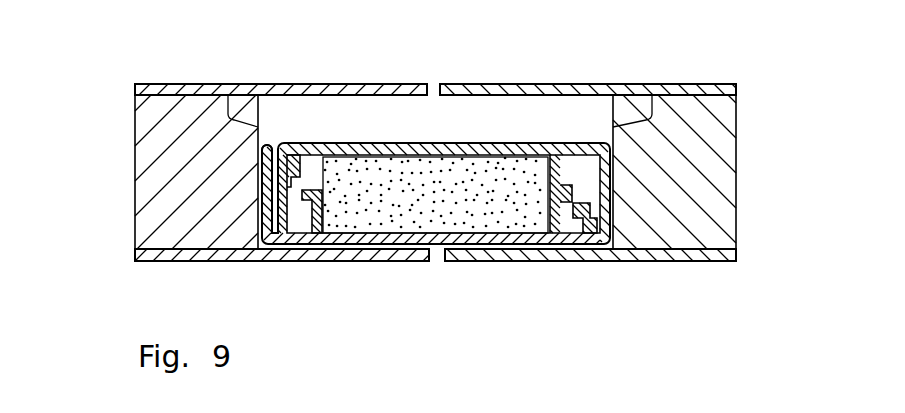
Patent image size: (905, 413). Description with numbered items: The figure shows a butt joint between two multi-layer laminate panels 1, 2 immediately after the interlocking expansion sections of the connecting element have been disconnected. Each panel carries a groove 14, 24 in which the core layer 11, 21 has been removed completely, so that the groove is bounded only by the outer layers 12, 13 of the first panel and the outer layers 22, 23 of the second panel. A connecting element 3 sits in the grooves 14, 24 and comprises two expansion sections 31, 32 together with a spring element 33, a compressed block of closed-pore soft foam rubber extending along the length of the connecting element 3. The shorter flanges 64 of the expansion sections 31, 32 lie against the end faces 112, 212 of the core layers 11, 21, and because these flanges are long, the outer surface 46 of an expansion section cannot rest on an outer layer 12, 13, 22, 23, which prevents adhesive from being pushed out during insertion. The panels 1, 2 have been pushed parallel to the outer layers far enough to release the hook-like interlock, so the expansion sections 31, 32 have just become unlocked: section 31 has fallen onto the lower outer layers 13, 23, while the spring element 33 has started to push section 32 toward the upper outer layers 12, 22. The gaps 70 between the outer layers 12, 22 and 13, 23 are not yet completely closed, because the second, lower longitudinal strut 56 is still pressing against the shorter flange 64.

The multi-layer laminate panel 1 is at (746, 232).
The multi-layer laminate panel 2 is at (128, 237).
The connecting element 3 is at (529, 120).
The core layer 11 is at (675, 111).
The outer layer 12 is at (697, 84).
The outer layer 13 is at (702, 261).
The groove 14 is at (572, 122).
The core layer 21 is at (203, 120).
The outer layer 22 is at (177, 84).
The outer layer 23 is at (180, 261).
The groove 24 is at (300, 125).
The expansion section 31 is at (383, 246).
The expansion section 32 is at (487, 143).
The spring element 33 is at (490, 208).
The outer surface 46 is at (378, 143).
The second, lower longitudinal strut 56 is at (265, 167).
The shorter flange 64 is at (262, 208).
The gap 70 is at (433, 80).
The end face 112 is at (651, 84).
The end face 212 is at (228, 84).